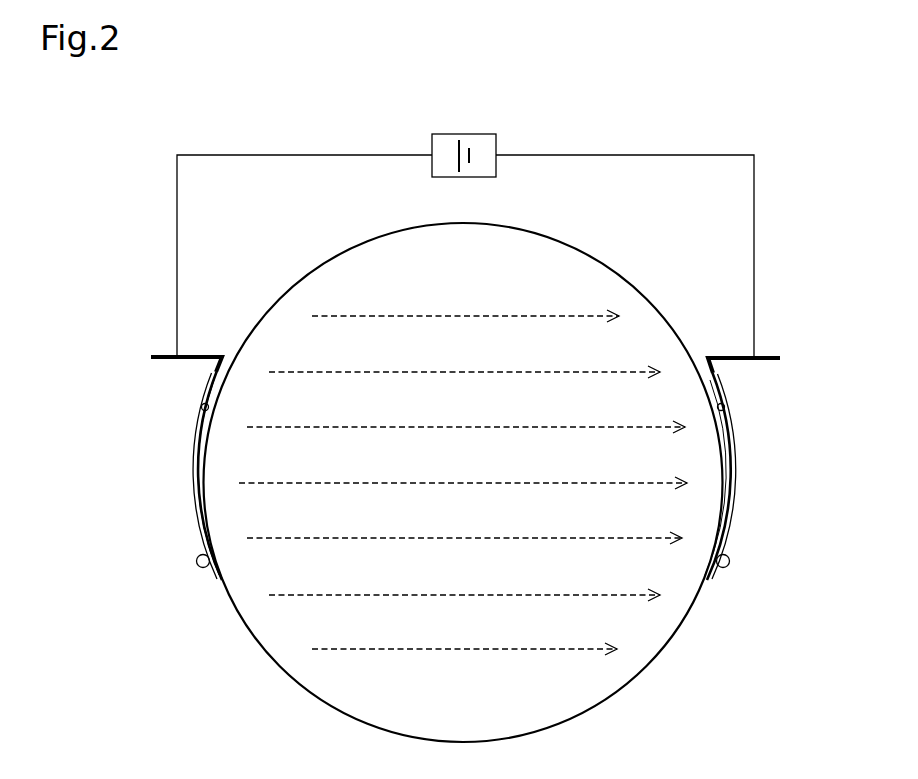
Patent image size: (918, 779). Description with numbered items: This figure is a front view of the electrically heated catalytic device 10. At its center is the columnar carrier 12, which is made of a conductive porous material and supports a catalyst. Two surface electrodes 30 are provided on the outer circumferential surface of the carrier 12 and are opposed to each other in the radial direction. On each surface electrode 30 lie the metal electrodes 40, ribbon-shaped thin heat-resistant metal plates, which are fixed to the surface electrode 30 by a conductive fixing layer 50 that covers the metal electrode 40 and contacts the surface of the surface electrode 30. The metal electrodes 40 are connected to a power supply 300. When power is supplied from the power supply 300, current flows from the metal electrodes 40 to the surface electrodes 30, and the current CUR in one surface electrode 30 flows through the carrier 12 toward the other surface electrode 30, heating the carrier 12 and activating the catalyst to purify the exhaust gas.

The electrically heated catalytic device 10 is at (113, 258).
The carrier 12 is at (289, 290).
The surface electrode 30 is at (222, 582).
The metal electrode 40 is at (197, 483).
The fixing layer 50 is at (198, 560).
The power supply 300 is at (496, 140).
The current CUR is at (353, 483).